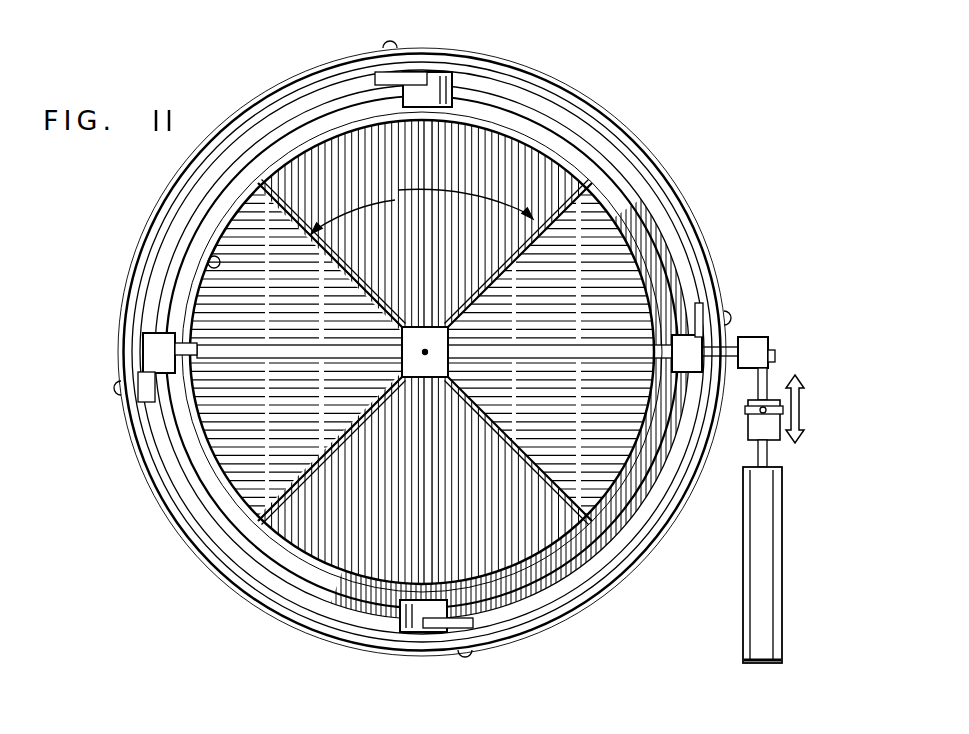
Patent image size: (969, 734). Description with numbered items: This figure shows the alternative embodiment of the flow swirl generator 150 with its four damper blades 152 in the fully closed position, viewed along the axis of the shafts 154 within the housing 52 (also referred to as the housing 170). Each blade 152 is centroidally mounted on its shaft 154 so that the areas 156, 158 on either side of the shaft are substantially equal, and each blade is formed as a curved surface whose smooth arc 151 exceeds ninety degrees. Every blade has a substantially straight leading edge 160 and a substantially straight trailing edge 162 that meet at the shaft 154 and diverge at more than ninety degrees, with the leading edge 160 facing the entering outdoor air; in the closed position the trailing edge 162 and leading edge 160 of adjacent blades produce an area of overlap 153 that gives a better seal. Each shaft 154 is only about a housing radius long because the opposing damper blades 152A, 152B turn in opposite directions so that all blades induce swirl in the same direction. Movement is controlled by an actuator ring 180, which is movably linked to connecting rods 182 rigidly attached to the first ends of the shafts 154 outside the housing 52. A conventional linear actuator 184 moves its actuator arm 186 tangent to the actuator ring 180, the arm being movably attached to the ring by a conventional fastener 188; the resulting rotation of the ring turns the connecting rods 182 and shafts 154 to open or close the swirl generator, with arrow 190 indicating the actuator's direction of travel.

The housing 52 is at (215, 465).
The flow swirl generator 150 is at (716, 176).
The smooth arc 151 is at (422, 207).
The damper blade 152 is at (558, 160).
The opposing damper blade 152A is at (213, 404).
The opposing damper blade 152B is at (672, 440).
The area of overlap 153 is at (632, 140).
The shaft 154 is at (634, 340).
The blade area 156 is at (608, 490).
The blade area 158 is at (690, 262).
The leading edge 160 is at (520, 287).
The trailing edge 162 is at (588, 174).
The housing 170 is at (207, 262).
The actuator ring 180 is at (592, 600).
The connecting rod 182 is at (418, 74).
The linear actuator 184 is at (776, 576).
The actuator arm 186 is at (776, 452).
The fastener 188 is at (757, 338).
The actuator motion arrow 190 is at (800, 415).